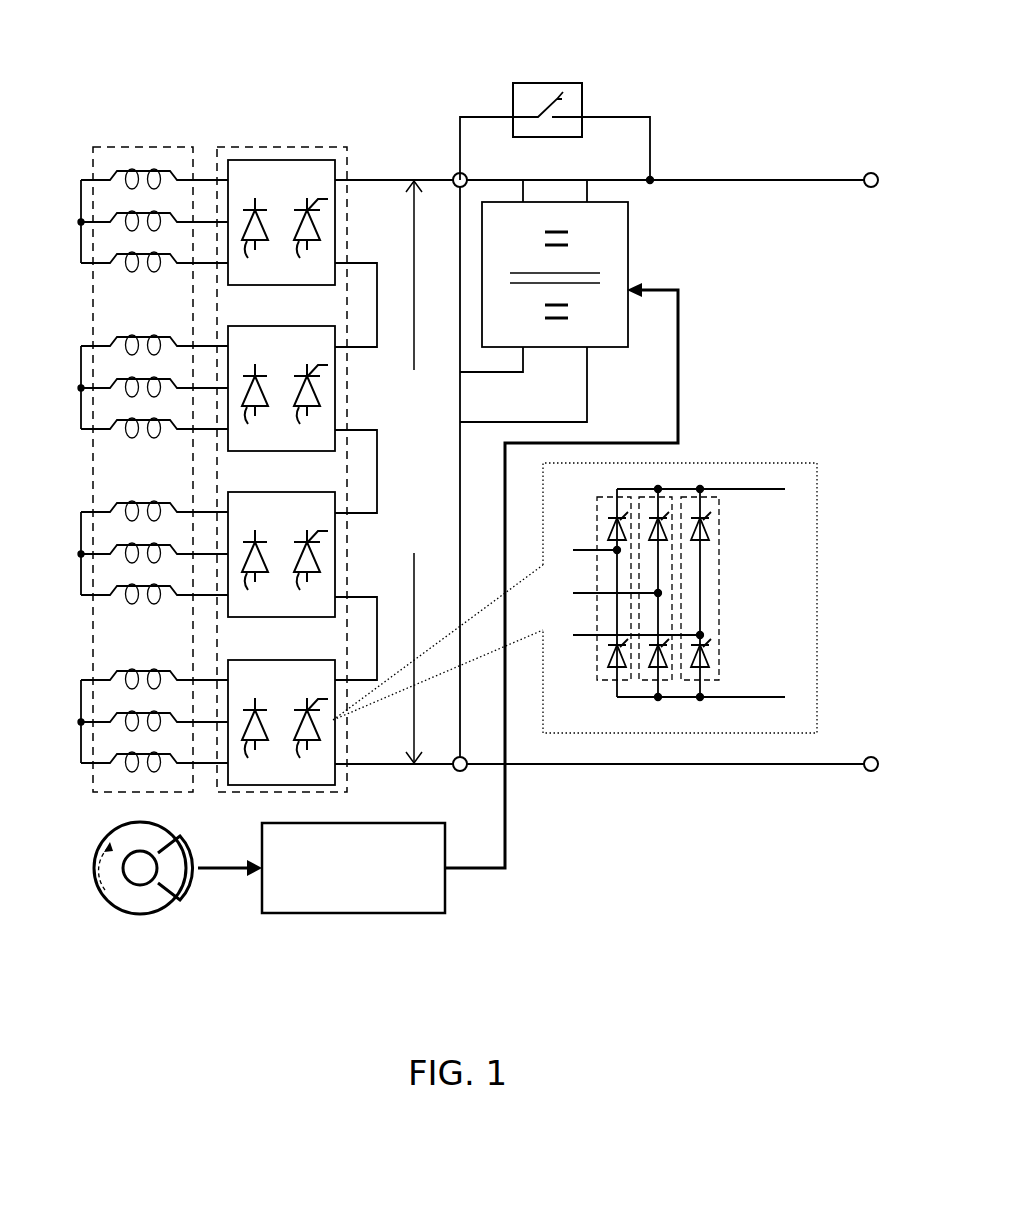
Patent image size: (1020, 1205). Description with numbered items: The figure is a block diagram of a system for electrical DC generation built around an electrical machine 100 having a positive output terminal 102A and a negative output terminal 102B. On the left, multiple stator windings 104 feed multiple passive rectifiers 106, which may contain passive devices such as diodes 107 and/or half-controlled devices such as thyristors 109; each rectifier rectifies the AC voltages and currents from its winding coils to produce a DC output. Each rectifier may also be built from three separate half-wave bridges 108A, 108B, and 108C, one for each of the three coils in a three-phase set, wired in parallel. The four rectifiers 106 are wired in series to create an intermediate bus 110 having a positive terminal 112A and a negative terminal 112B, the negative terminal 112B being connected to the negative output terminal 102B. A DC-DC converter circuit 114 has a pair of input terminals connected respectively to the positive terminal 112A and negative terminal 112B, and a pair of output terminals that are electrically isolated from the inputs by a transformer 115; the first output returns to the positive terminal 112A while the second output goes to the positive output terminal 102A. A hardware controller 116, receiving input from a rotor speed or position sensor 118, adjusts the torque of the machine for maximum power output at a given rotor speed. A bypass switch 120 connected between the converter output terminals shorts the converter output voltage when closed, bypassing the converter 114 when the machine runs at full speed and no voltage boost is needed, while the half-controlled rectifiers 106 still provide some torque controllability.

The electrical machine 100 is at (149, 50).
The positive output terminal 102A is at (864, 172).
The negative output terminal 102B is at (863, 773).
The stator windings 104 is at (148, 147).
The passive rectifiers 106 is at (285, 147).
The diodes 107 is at (255, 489).
The thyristors 109 is at (310, 489).
The half-wave bridge 108A is at (610, 678).
The half-wave bridge 108B is at (650, 680).
The half-wave bridge 108C is at (688, 683).
The intermediate bus 110 is at (412, 243).
The positive terminal 112A is at (454, 174).
The negative terminal 112B is at (453, 771).
The DC-DC converter circuit 114 is at (630, 222).
The transformer 115 is at (608, 279).
The hardware controller 116 is at (447, 913).
The rotor speed or position sensor 118 is at (190, 900).
The bypass switch 120 is at (582, 100).